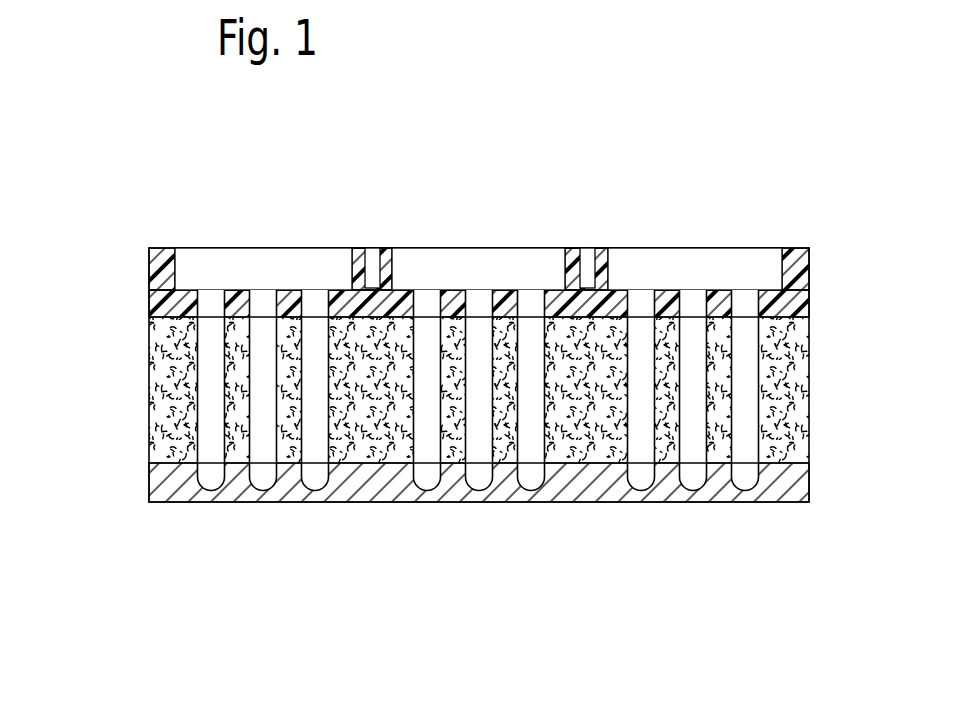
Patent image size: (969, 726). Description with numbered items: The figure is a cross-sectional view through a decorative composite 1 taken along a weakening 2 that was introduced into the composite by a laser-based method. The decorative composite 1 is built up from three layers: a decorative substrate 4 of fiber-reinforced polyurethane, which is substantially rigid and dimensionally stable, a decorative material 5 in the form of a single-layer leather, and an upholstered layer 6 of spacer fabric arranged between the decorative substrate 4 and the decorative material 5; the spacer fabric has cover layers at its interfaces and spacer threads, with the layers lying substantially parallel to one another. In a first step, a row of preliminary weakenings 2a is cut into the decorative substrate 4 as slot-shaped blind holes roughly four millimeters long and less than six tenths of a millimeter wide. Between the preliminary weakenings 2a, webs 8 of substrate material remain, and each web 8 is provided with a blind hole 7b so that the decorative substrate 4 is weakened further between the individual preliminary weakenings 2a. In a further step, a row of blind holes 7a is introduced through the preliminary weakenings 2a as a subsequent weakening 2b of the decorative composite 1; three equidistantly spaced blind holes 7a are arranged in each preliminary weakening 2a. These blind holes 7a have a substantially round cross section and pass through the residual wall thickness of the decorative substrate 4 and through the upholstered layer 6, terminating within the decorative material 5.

The decorative composite 1 is at (112, 242).
The weakening 2 is at (142, 315).
The preliminary weakenings 2a is at (218, 265).
The subsequent weakening 2b is at (192, 432).
The decorative substrate 4 is at (810, 292).
The decorative material 5 is at (810, 477).
The upholstered layer 6 is at (790, 387).
The blind holes 7a is at (313, 442).
The blind holes 7b is at (372, 263).
The webs 8 is at (393, 267).